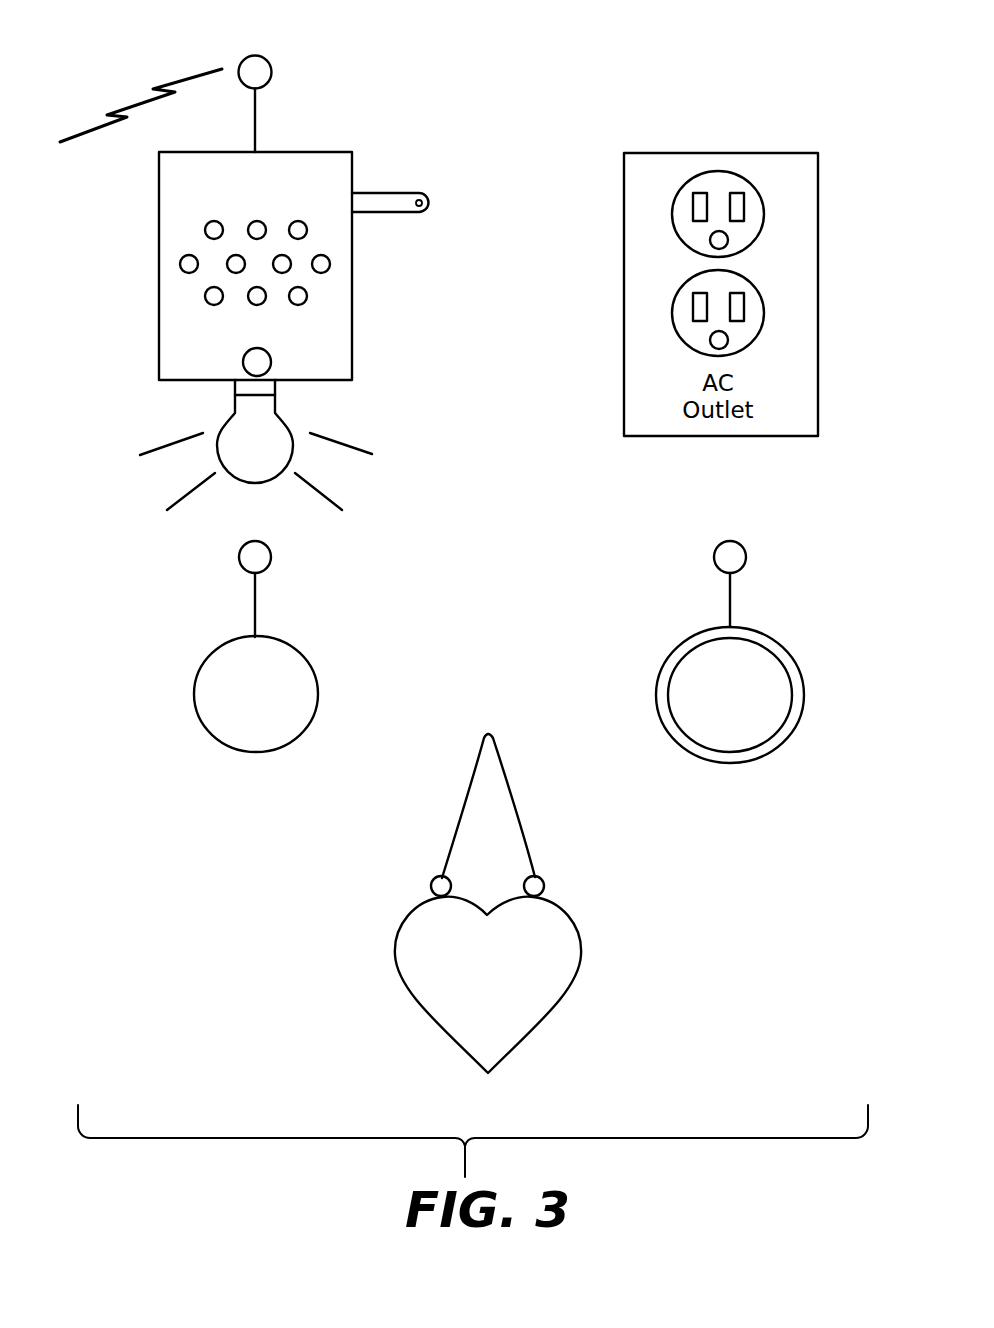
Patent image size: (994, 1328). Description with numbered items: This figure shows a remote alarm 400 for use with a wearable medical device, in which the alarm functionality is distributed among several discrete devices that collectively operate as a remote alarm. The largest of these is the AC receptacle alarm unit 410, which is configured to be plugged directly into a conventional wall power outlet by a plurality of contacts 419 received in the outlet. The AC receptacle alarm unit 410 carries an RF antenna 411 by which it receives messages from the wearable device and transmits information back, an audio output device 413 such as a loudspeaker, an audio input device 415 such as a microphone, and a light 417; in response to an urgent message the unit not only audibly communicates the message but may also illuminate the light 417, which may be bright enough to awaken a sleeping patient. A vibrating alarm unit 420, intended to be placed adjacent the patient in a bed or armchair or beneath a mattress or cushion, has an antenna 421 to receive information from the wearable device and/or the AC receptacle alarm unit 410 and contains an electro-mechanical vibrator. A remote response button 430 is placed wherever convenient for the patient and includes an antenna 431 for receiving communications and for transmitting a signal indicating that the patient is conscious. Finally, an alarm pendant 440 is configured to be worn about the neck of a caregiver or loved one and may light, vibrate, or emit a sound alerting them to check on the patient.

The remote alarm 400 is at (577, 93).
The AC receptacle alarm unit 410 is at (157, 239).
The RF antenna 411 is at (257, 118).
The audio output device 413 is at (205, 296).
The audio input device 415 is at (271, 358).
The light 417 is at (293, 453).
The contacts 419 is at (392, 192).
The vibrating alarm unit 420 is at (205, 659).
The antenna 421 is at (257, 597).
The remote response button 430 is at (790, 738).
The antenna 431 is at (732, 593).
The alarm pendant 440 is at (402, 930).